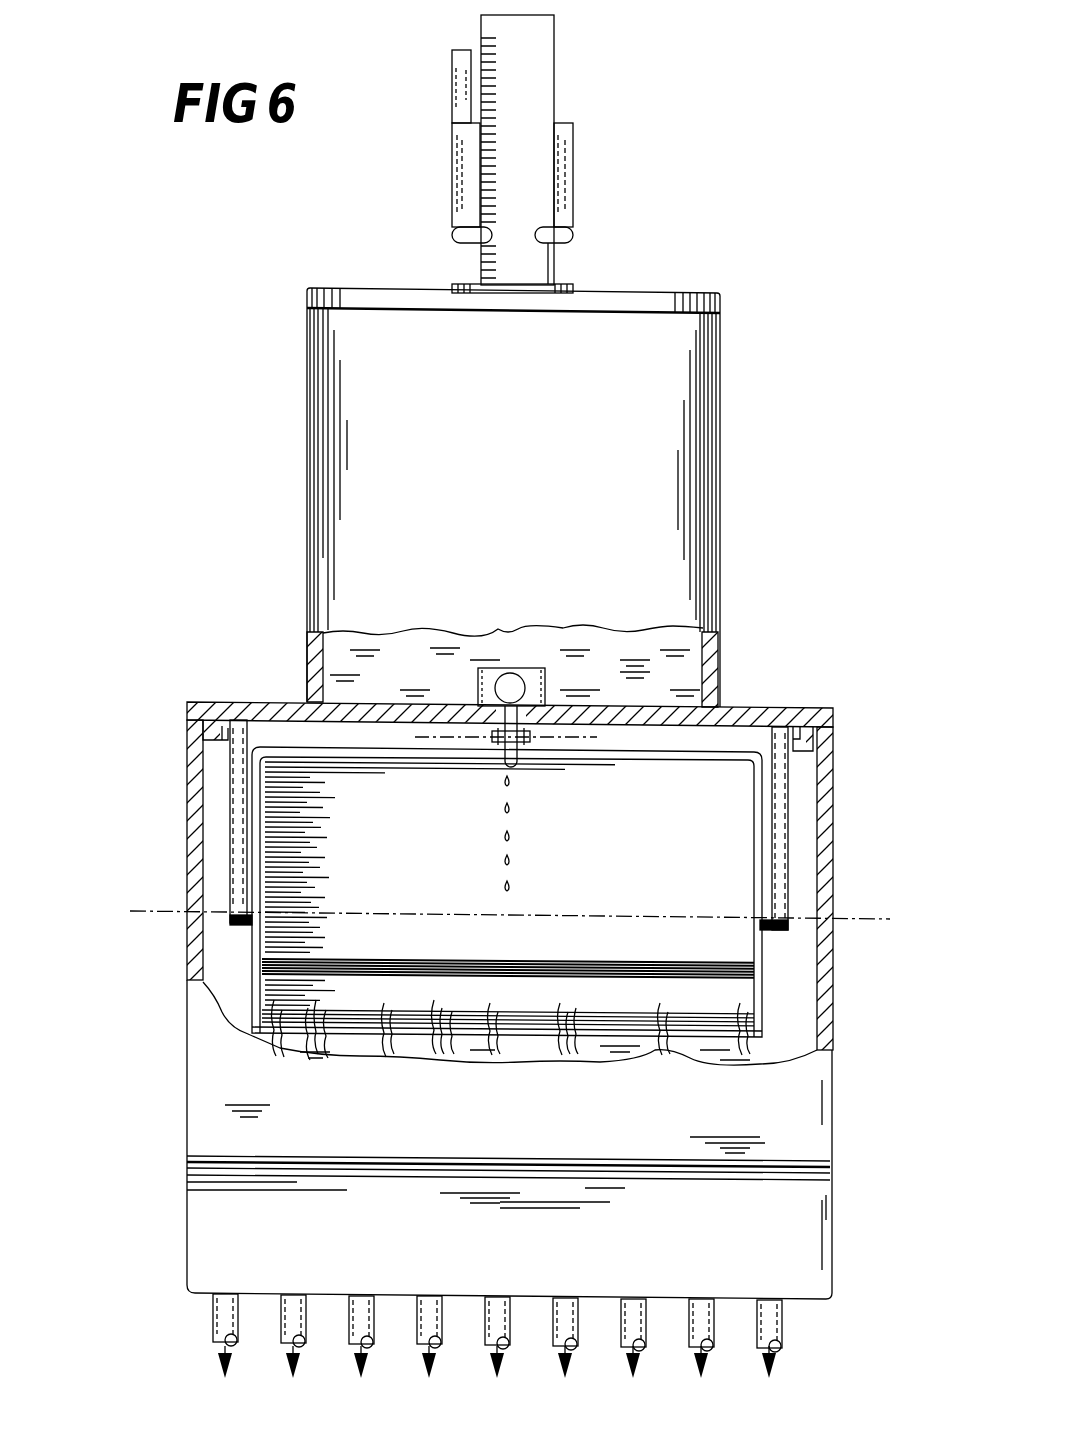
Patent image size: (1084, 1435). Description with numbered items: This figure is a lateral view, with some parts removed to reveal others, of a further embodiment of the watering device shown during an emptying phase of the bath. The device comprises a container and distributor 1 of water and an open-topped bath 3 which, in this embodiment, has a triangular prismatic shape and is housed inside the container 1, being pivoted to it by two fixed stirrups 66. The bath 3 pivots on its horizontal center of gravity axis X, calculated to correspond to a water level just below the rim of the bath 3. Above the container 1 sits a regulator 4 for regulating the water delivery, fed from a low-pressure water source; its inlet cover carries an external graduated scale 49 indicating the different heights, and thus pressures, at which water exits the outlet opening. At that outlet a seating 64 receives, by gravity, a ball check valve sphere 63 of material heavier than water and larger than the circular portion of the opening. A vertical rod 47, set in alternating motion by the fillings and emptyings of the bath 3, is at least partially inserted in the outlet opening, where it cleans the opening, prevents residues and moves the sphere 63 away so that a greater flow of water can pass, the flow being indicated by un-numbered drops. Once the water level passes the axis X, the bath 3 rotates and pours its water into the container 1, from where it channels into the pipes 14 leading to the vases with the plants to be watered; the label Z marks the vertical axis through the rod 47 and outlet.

The container and distributor 1 is at (838, 897).
The bath 3 is at (260, 790).
The regulator 4 is at (736, 294).
The pipes 14 is at (295, 1305).
The rod 47 is at (478, 705).
The graduated scale 49 is at (538, 100).
The ball check valve sphere 63 is at (522, 672).
The seating 64 is at (573, 689).
The fixed stirrups 66 is at (240, 848).
The horizontal center of gravity axis X is at (140, 911).
The axis Z is at (597, 737).